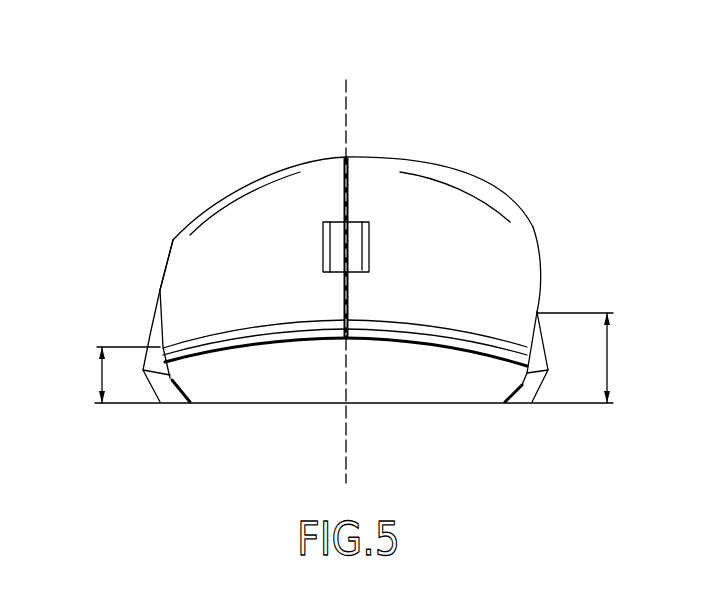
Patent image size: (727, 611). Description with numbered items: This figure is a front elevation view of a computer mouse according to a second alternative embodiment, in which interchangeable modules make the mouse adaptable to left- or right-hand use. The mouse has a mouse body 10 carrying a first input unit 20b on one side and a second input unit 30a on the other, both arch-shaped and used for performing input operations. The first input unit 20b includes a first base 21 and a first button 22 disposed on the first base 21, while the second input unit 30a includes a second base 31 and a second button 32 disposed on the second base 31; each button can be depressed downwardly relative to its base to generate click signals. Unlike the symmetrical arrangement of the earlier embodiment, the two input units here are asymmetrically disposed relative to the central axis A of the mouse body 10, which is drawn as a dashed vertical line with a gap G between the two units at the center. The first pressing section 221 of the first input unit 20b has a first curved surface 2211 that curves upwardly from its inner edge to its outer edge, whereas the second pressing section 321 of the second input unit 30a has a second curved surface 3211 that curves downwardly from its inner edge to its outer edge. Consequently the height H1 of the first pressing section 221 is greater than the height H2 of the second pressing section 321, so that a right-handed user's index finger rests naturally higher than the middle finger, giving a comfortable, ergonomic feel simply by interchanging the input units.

The mouse body 10 is at (150, 331).
The first input unit 20b is at (450, 167).
The second input unit 30a is at (250, 182).
The first button 22 is at (487, 222).
The first pressing section 221 is at (492, 280).
The second button 32 is at (213, 238).
The second pressing section 321 is at (210, 307).
The second base 31 is at (206, 357).
The second curved surface 3211 is at (258, 325).
The first base 21 is at (487, 355).
The first curved surface 2211 is at (438, 305).
The gap G is at (345, 308).
The central axis A is at (345, 128).
The height of first pressing section H1 is at (575, 358).
The height of second pressing section H2 is at (115, 375).